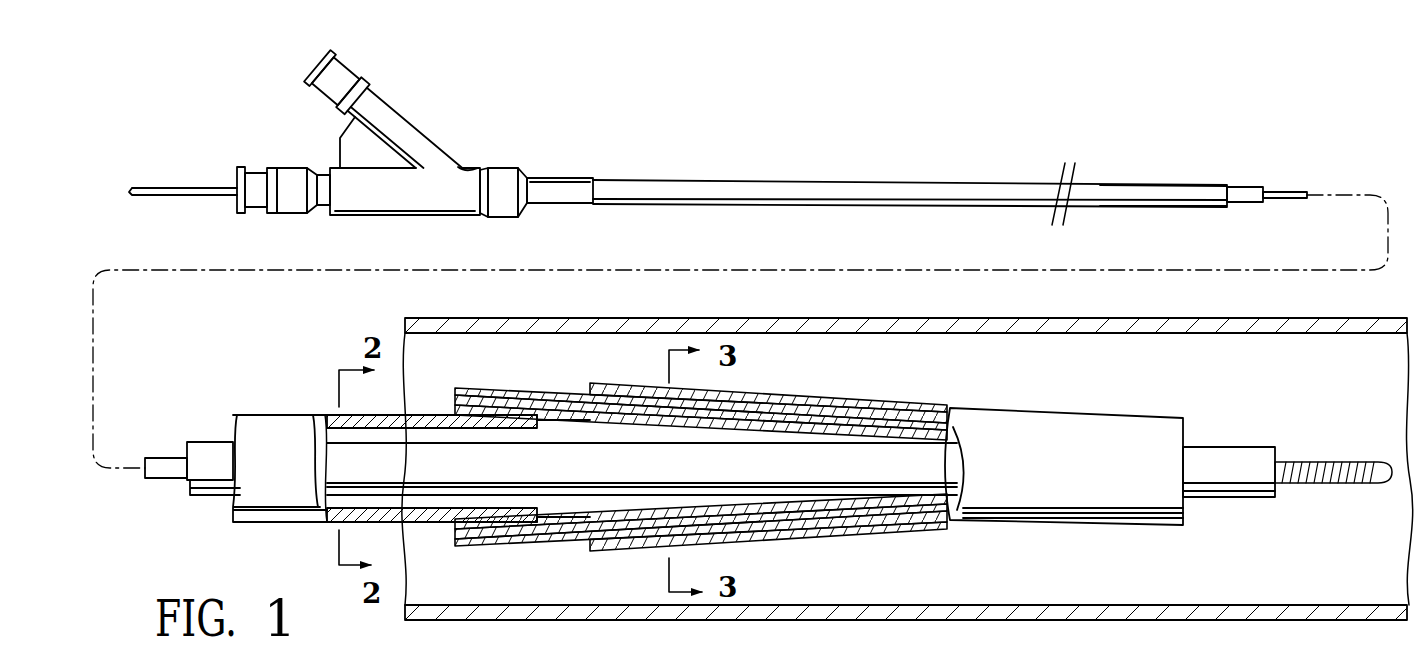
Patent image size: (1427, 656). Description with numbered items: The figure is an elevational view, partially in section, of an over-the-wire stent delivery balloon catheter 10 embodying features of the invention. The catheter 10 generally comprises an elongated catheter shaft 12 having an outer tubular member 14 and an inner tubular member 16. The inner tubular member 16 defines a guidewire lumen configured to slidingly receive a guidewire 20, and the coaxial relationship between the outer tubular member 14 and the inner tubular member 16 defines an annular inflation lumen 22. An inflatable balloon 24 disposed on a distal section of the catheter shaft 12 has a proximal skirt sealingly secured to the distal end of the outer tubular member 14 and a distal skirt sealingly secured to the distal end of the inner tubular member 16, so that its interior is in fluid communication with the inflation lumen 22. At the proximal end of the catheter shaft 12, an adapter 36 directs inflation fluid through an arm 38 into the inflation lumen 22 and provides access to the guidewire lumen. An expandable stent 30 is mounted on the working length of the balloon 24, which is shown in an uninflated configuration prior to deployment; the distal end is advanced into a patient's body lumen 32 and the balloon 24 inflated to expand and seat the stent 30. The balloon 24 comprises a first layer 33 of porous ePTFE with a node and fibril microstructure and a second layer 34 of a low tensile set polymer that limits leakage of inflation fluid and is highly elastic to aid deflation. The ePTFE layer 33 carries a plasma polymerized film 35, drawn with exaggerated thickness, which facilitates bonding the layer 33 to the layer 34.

The stent delivery balloon catheter 10 is at (1012, 122).
The catheter shaft 12 is at (817, 180).
The outer tubular member 14 is at (1175, 207).
The inner tubular member 16 is at (1247, 188).
The guidewire 20 is at (187, 187).
The annular inflation lumen 22 is at (443, 505).
The inflatable balloon 24 is at (992, 423).
The expandable stent 30 is at (880, 397).
The body lumen 32 is at (1188, 353).
The first layer 33 is at (572, 395).
The second layer 34 is at (473, 410).
The plasma polymerized film 35 is at (520, 400).
The adapter 36 is at (335, 168).
The arm 38 is at (407, 120).